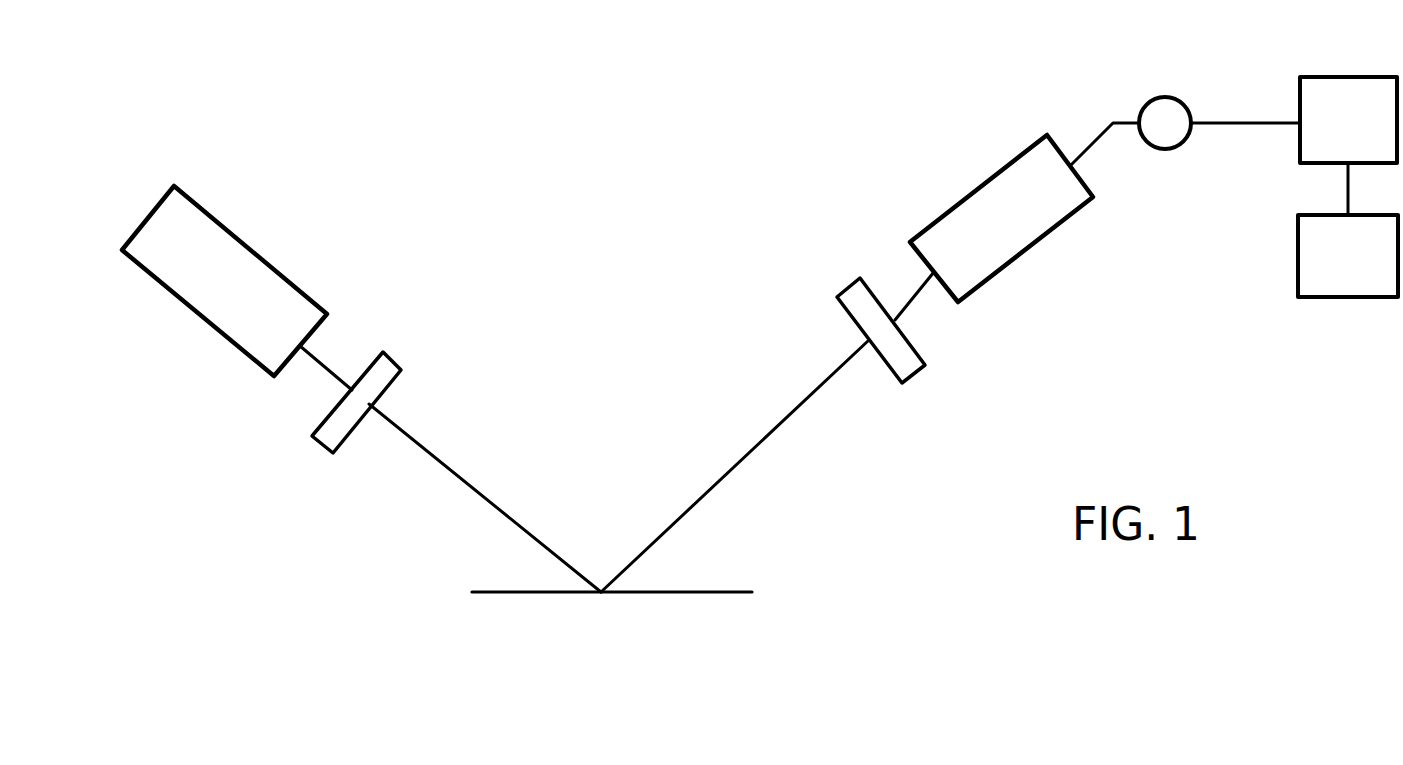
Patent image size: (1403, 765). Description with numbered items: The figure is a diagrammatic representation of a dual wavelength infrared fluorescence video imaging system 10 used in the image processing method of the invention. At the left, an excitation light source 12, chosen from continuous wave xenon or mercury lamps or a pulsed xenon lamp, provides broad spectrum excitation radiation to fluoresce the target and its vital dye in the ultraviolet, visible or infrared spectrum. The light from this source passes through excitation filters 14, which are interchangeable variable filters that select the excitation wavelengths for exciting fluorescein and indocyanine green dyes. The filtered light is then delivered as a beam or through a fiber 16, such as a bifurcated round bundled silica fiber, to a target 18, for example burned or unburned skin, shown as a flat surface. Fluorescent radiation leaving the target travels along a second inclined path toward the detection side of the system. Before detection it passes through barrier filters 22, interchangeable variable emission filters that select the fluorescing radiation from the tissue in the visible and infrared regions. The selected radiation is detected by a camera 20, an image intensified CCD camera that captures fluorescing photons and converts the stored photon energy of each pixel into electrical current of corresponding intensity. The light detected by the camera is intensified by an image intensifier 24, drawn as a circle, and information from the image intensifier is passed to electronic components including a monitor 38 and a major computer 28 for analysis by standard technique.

The video imaging system 10 is at (575, 327).
The excitation light source 12 is at (272, 264).
The excitation filters 14 is at (396, 371).
The fiber 16 is at (492, 504).
The target 18 is at (650, 591).
The camera 20 is at (1063, 220).
The barrier filters 22 is at (922, 368).
The image intensifier 24 is at (1153, 99).
The monitor 38 is at (1366, 137).
The major computer 28 is at (1355, 272).